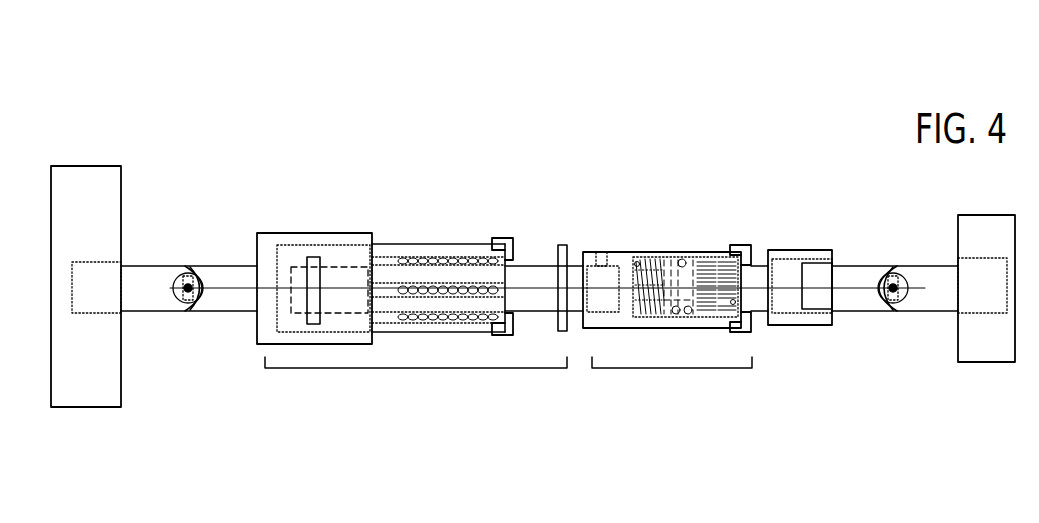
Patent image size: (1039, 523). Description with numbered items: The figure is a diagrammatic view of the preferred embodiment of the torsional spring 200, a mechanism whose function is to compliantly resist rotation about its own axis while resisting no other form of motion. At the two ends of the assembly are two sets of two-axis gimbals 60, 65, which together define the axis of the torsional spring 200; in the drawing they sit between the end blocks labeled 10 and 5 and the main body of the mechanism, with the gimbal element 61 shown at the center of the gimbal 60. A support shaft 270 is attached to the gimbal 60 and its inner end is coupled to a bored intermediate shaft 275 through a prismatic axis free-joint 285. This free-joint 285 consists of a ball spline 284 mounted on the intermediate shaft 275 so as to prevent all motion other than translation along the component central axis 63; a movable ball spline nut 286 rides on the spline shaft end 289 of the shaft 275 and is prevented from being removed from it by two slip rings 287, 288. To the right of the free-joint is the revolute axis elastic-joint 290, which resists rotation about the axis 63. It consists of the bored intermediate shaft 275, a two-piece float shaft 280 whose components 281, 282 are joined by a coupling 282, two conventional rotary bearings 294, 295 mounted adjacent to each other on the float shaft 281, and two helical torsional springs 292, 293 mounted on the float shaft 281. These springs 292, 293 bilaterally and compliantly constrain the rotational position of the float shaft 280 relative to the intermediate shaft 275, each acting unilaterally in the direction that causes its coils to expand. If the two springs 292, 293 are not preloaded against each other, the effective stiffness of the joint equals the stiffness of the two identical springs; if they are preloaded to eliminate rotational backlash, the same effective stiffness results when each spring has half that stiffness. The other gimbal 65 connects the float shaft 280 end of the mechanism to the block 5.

The first device / source unit 10 is at (71, 204).
The second device / receiving unit 5 is at (977, 251).
The 2-axis gimbal 60 is at (183, 317).
The lens 61 is at (183, 280).
The component central axis 63 is at (248, 296).
The 2-axis gimbal 65 is at (888, 317).
The torsional spring 200 is at (590, 135).
The support shaft 270 is at (222, 261).
The intermediate shaft 275 is at (533, 262).
The float shaft 280 is at (850, 263).
The float shaft component 281 is at (755, 262).
The coupling 282 is at (800, 250).
The ball spline 284 is at (463, 272).
The prismatic axis free-joint 285 is at (412, 316).
The movable ball spline nut 286 is at (420, 243).
The slip ring 287 is at (310, 256).
The slip ring 288 is at (561, 243).
The spline shaft end 289 is at (350, 280).
The revolute axis elastic-joint 290 is at (667, 326).
The helical torsional spring 292 is at (643, 256).
The helical torsional spring 293 is at (712, 254).
The rotary bearing 294 is at (675, 254).
The rotary bearing 295 is at (688, 254).